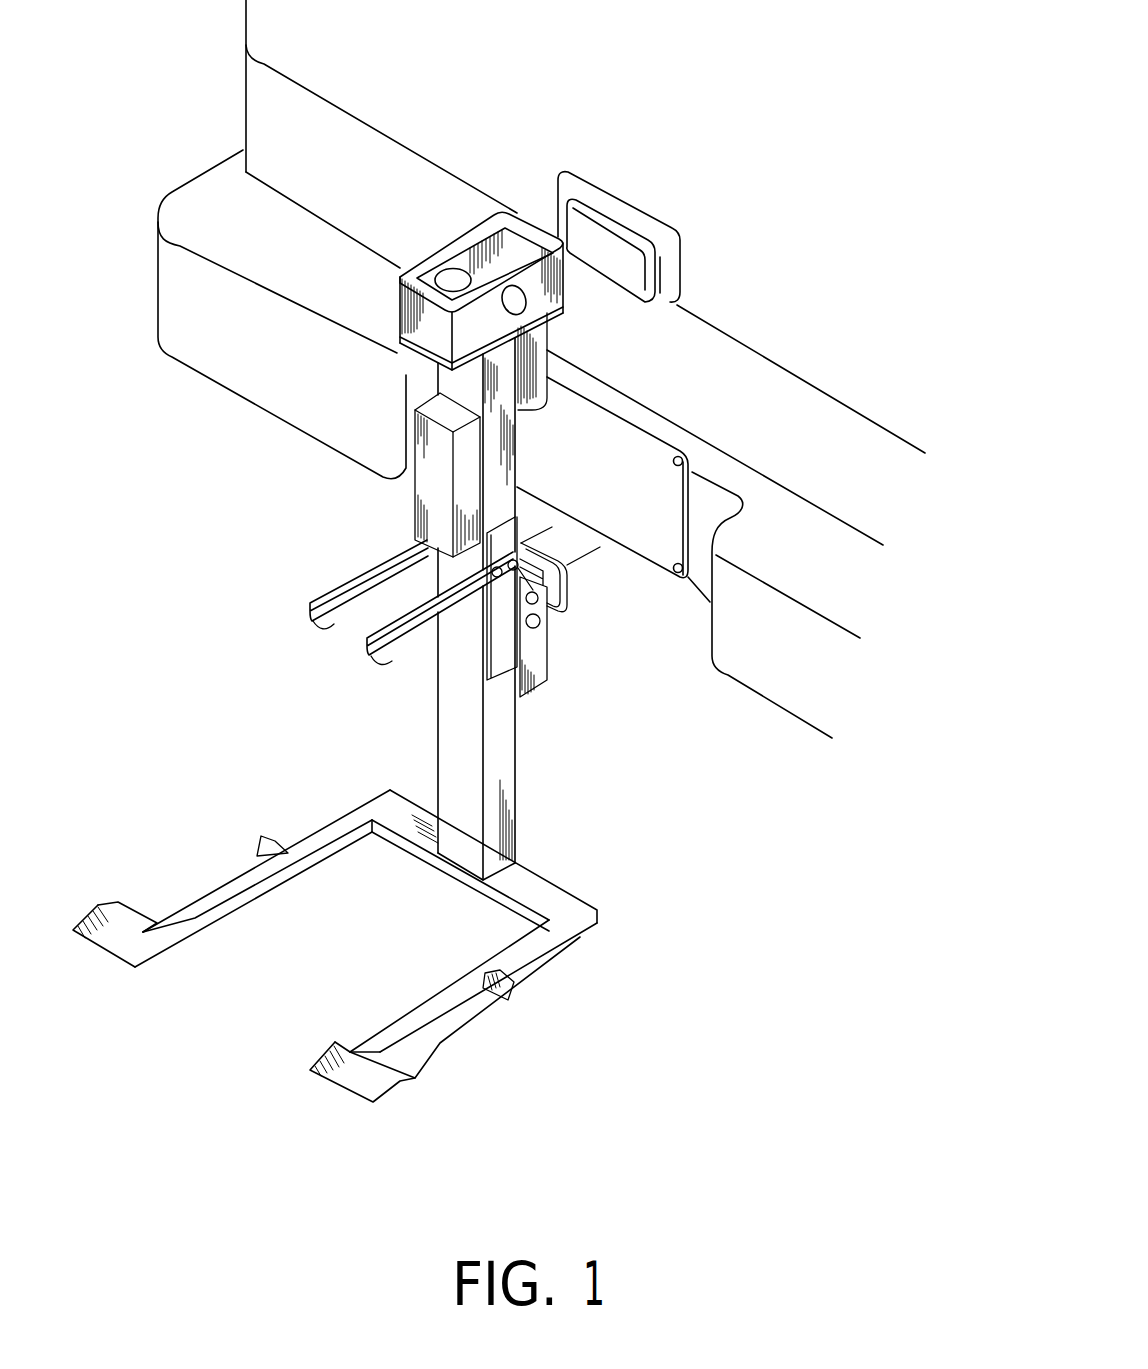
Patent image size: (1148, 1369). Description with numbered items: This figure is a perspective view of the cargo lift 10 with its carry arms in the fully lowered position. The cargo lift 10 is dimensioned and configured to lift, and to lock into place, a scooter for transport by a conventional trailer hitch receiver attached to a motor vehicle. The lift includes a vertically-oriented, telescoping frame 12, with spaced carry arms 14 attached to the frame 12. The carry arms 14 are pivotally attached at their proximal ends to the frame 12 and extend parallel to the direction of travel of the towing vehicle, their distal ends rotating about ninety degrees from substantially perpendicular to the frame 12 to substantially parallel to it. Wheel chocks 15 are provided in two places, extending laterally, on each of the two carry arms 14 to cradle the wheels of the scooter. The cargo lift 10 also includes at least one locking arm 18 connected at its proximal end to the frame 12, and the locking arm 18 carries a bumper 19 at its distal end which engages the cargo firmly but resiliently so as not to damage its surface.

The cargo lift 10 is at (219, 453).
The telescoping frame 12 is at (437, 755).
The carry arms 14 is at (203, 893).
The wheel chocks 15 is at (103, 948).
The locking arm 18 is at (355, 570).
The bumper 19 is at (320, 628).